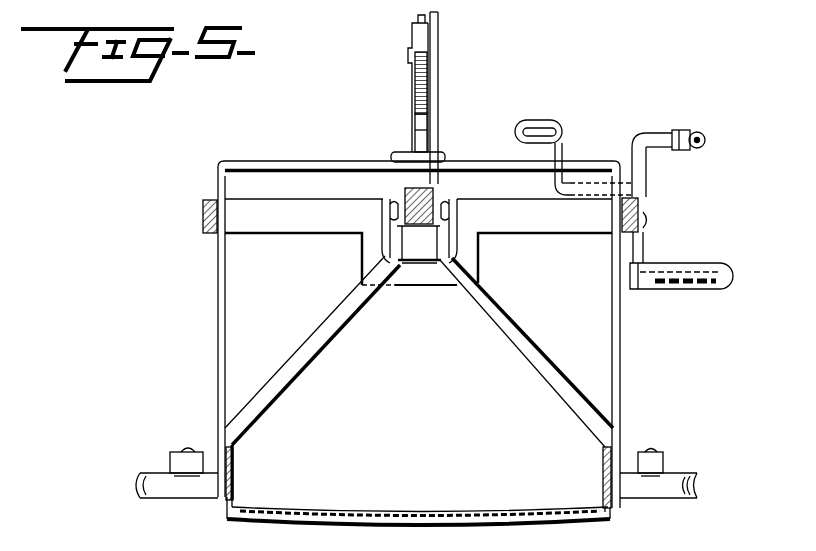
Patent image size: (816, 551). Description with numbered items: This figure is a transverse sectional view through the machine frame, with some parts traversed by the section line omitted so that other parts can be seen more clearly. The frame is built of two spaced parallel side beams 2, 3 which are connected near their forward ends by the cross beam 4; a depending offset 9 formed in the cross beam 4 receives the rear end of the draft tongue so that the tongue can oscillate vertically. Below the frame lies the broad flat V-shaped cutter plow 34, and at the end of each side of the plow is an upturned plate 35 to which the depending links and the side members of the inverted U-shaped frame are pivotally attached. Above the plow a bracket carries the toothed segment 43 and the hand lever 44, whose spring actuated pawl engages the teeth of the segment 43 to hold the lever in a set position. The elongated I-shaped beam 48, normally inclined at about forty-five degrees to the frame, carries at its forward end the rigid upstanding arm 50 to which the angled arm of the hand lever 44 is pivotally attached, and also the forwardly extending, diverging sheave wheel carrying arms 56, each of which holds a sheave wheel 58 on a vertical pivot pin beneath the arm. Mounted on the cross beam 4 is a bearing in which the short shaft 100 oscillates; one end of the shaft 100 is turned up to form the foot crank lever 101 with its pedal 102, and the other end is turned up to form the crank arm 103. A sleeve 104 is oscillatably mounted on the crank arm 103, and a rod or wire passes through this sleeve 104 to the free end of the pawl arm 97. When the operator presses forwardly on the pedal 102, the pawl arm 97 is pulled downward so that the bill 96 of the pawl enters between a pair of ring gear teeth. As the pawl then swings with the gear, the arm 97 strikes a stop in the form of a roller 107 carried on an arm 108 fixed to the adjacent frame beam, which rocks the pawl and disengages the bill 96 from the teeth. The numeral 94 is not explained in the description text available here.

The side beam 2 is at (612, 240).
The side beam 3 is at (202, 216).
The cross beam 4 is at (303, 221).
The depending offset 9 is at (383, 253).
The cutter plow 34 is at (347, 522).
The upturned plate 35 is at (240, 492).
The toothed segment 43 is at (414, 88).
The hand lever 44 is at (438, 31).
The elongated beam 48 is at (421, 286).
The upstanding arm 50 is at (423, 180).
The sheave wheel carrying arm 56 is at (282, 384).
The sheave wheel 58 is at (163, 487).
The bottom member 94 is at (711, 550).
The bill 96 is at (629, 545).
The pawl arm 97 is at (473, 543).
The short shaft 100 is at (635, 182).
The foot crank lever 101 is at (564, 146).
The pedal 102 is at (542, 117).
The crank arm 103 is at (660, 172).
The sleeve 104 is at (705, 135).
The roller 107 is at (718, 264).
The arm 108 is at (645, 250).